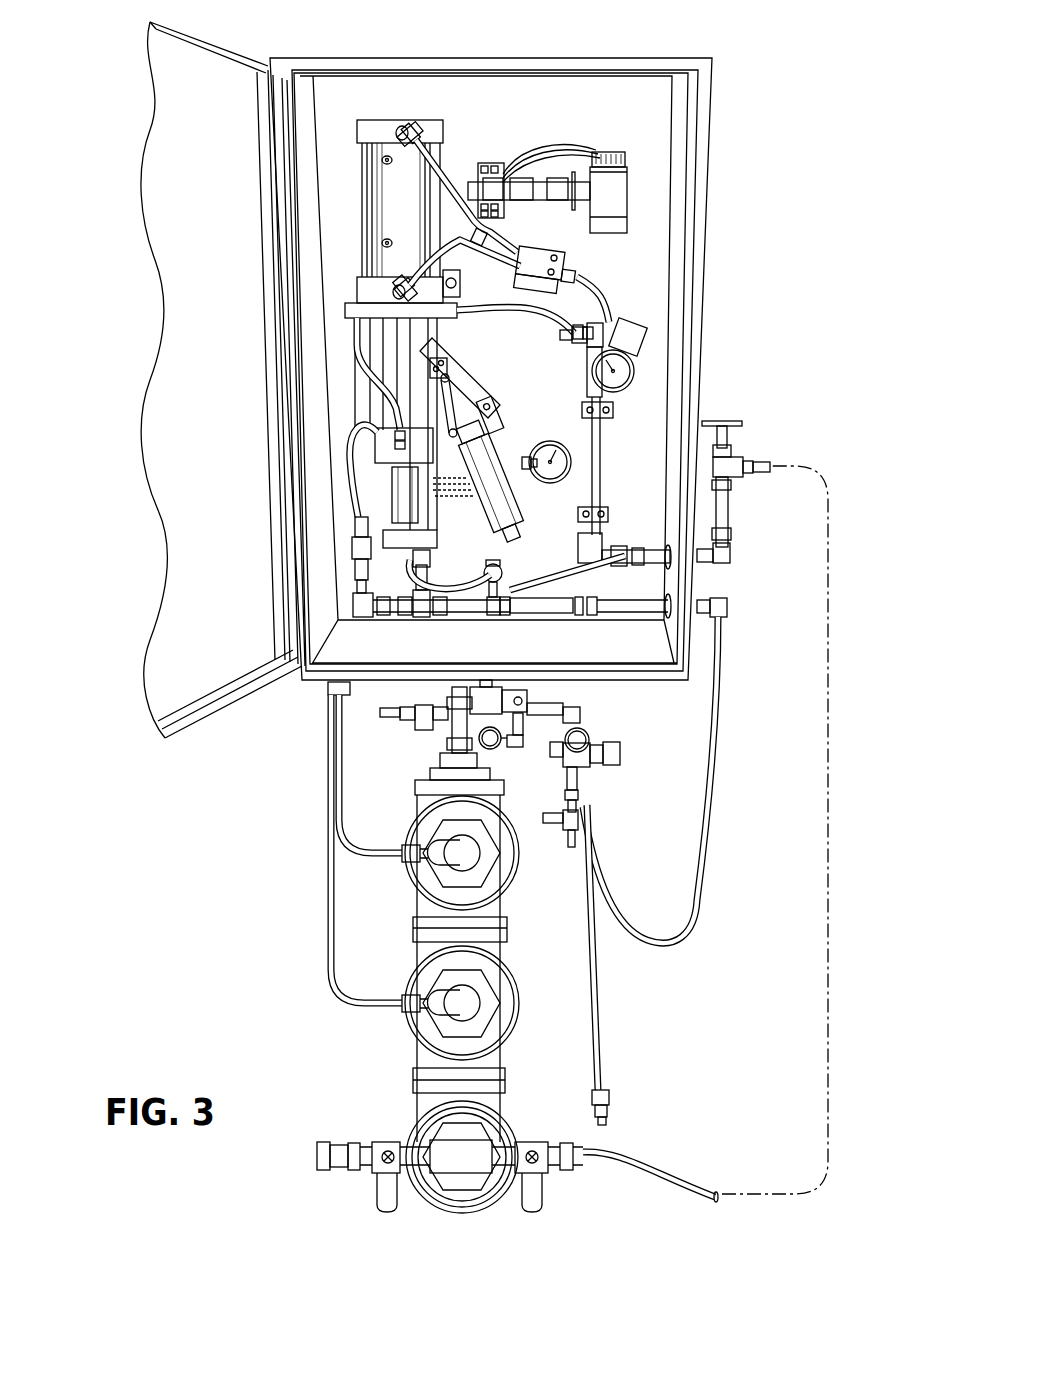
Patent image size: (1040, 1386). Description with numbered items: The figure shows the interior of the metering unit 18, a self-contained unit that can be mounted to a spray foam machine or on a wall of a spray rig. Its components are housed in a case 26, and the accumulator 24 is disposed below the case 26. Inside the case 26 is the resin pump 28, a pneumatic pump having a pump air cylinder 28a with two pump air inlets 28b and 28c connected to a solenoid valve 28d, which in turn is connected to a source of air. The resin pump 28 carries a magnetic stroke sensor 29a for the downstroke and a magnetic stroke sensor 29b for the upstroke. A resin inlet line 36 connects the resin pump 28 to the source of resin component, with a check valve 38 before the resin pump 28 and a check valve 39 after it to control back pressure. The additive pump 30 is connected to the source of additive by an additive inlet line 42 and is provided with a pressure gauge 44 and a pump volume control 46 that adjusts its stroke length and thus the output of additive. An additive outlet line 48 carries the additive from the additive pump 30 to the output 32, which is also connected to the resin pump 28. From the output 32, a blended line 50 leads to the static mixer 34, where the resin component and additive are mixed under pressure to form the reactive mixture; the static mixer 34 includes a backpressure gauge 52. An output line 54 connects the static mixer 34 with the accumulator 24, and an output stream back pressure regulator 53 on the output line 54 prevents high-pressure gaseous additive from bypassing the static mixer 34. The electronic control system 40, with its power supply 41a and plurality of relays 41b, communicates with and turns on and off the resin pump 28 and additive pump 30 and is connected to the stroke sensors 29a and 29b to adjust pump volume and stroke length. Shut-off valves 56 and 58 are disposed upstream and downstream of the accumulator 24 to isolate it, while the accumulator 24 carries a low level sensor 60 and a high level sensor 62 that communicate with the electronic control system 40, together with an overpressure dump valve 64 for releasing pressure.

The metering unit 18 is at (792, 93).
The accumulator 24 is at (417, 930).
The case 26 is at (333, 62).
The resin pump 28 is at (377, 427).
The pump air cylinder 28a is at (395, 215).
The pump air inlet 28b is at (428, 135).
The pump air inlet 28c is at (393, 283).
The solenoid valve 28d is at (570, 260).
The magnetic stroke sensor 29a is at (382, 160).
The magnetic stroke sensor 29b is at (382, 243).
The additive pump 30 is at (497, 585).
The output 32 is at (377, 457).
The static mixer 34 is at (600, 437).
The resin inlet line 36 is at (661, 947).
The check valve 38 is at (557, 612).
The check valve 39 is at (358, 552).
The electronic control system 40 is at (588, 115).
The power supply 41a is at (605, 187).
The relays 41b is at (556, 180).
The additive inlet line 42 is at (603, 567).
The pressure gauge 44 is at (551, 440).
The pump volume control 46 is at (463, 375).
The additive outlet line 48 is at (413, 573).
The blended line 50 is at (355, 327).
The backpressure gauge 52 is at (640, 372).
The output stream back pressure regulator 53 is at (727, 443).
The output line 54 is at (703, 558).
The shut-off valve 56 is at (518, 1145).
The shut-off valve 58 is at (388, 1140).
The low level sensor 60 is at (490, 1000).
The high level sensor 62 is at (485, 860).
The overpressure dump valve 64 is at (435, 718).